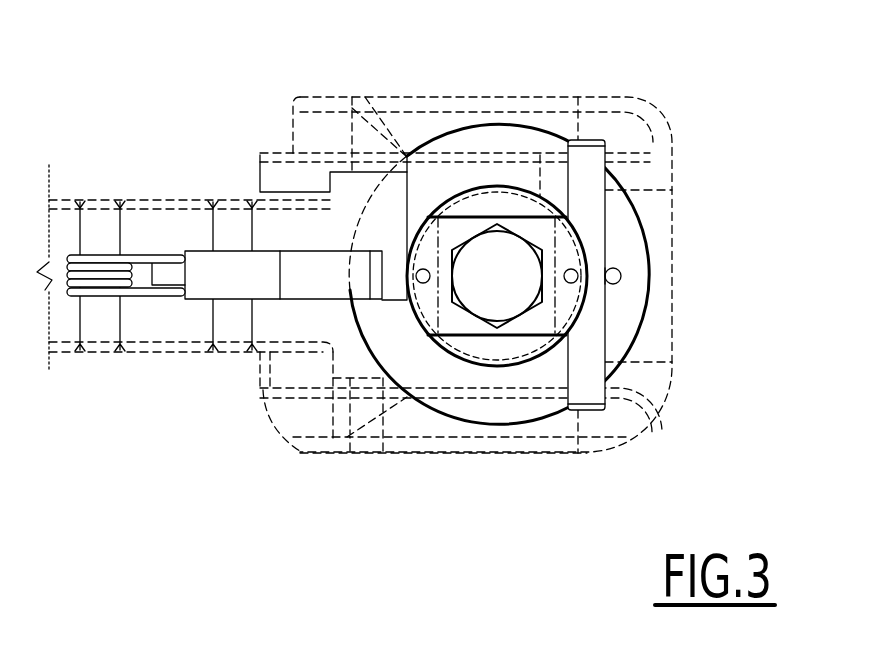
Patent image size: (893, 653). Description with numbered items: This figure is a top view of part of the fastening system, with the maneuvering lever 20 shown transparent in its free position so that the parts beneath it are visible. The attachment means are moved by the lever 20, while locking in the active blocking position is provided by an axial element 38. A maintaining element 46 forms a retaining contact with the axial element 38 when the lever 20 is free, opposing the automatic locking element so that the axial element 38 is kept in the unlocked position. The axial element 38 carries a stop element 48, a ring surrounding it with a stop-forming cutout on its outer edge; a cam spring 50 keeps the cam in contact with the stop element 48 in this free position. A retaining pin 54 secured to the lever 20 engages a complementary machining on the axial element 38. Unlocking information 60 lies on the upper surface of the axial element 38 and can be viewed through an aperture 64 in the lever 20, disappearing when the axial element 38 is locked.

The maneuvering lever 20 is at (655, 117).
The axial element 38 is at (502, 207).
The maintaining element 46 is at (297, 270).
The stop element 48 is at (473, 177).
The cam spring 50 is at (100, 272).
The retaining pin 54 is at (590, 207).
The unlocking information 60 is at (423, 252).
The aperture 64 is at (588, 237).